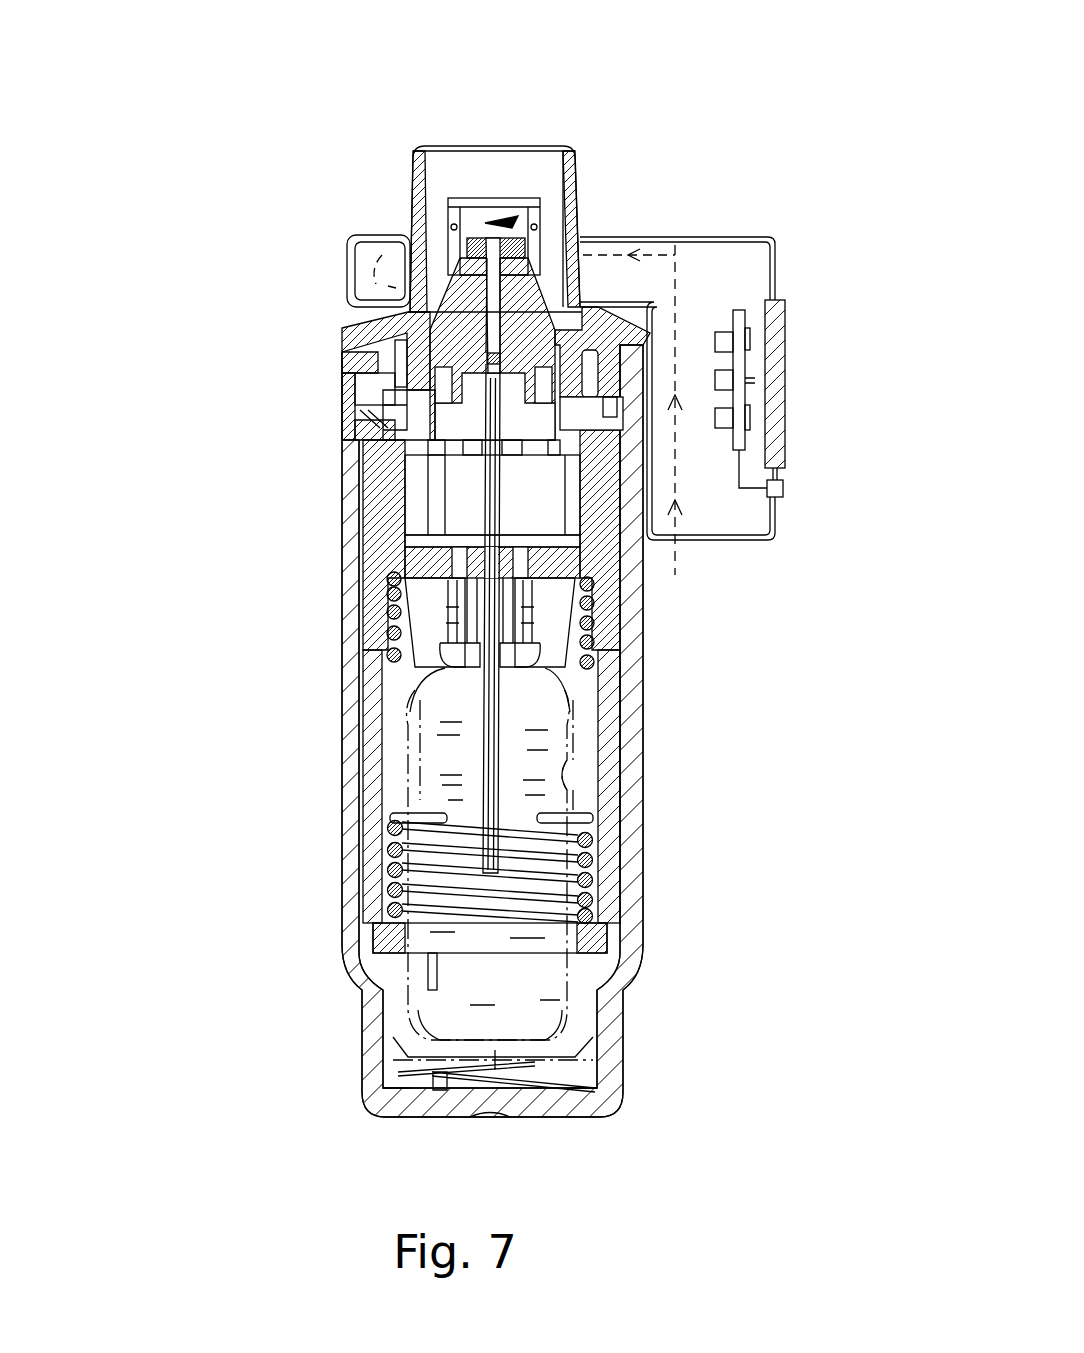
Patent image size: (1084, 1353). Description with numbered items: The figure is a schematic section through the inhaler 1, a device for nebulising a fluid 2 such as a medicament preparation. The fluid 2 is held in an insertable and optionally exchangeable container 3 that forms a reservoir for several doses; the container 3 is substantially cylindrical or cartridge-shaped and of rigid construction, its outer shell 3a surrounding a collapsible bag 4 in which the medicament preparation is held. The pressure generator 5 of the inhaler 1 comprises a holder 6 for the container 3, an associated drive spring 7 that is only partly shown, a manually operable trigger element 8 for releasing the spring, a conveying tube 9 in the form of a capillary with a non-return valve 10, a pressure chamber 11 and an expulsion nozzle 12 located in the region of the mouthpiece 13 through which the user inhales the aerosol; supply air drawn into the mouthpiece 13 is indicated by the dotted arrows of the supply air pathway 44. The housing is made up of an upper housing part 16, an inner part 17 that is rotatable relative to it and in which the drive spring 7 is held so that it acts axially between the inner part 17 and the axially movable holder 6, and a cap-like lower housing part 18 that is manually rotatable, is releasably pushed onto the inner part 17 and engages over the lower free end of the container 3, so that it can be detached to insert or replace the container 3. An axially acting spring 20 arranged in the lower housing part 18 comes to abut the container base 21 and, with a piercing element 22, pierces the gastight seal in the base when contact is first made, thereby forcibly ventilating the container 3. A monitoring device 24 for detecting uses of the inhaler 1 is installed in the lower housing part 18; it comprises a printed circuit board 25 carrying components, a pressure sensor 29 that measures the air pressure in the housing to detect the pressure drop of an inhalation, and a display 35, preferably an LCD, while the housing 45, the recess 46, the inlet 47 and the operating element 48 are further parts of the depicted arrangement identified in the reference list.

The inhaler 1 is at (683, 152).
The fluid 2 is at (543, 725).
The container 3 is at (605, 773).
The outer shell 3a is at (570, 738).
The bag 4 is at (593, 818).
The pressure generator 5 is at (505, 377).
The holder 6 is at (575, 572).
The drive spring 7 is at (375, 928).
The trigger element 8 is at (328, 380).
The conveying tube 9 is at (487, 483).
The non-return valve 10 is at (555, 335).
The pressure chamber 11 is at (493, 310).
The expulsion nozzle 12 is at (527, 202).
The mouthpiece 13 is at (413, 232).
The upper housing part 16 is at (355, 482).
The inner part 17 is at (382, 698).
The lower housing part 18 is at (344, 842).
The spring 20 is at (403, 1075).
The container base 21 is at (622, 1072).
The piercing element 22 is at (405, 1037).
The monitoring device 24 is at (447, 636).
The printed circuit board 25 is at (742, 396).
The pressure sensor 29 is at (727, 330).
The display 35 is at (775, 312).
The supply air pathway 44 is at (739, 486).
The housing 45 is at (743, 237).
The recess 46 is at (583, 240).
The inlet 47 is at (678, 543).
The operating element 48 is at (783, 490).